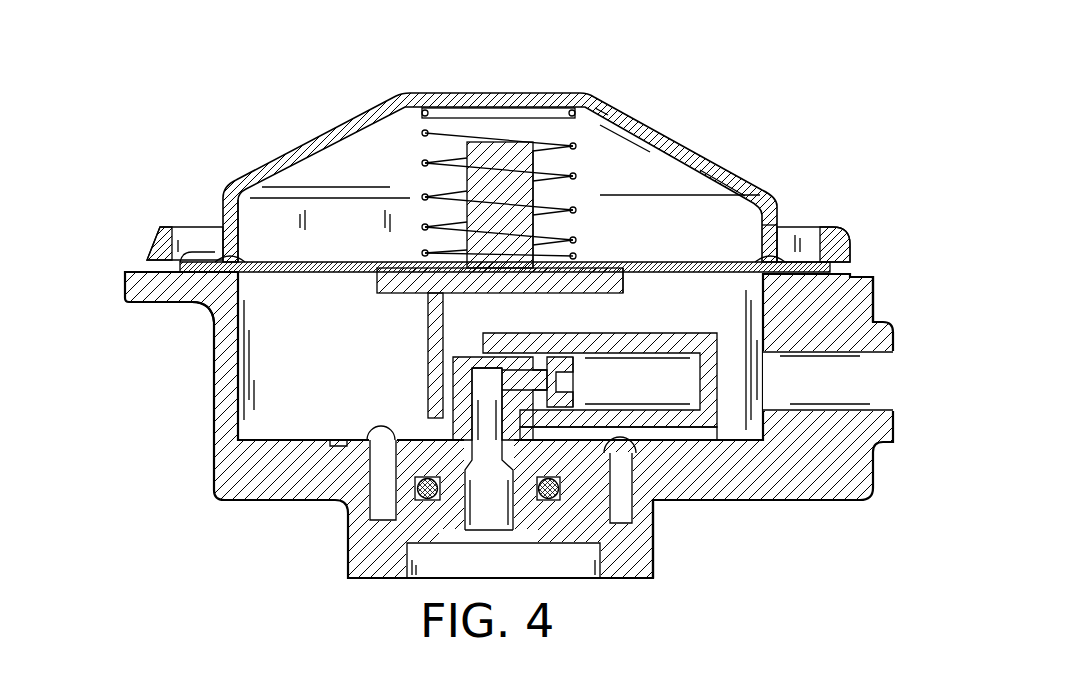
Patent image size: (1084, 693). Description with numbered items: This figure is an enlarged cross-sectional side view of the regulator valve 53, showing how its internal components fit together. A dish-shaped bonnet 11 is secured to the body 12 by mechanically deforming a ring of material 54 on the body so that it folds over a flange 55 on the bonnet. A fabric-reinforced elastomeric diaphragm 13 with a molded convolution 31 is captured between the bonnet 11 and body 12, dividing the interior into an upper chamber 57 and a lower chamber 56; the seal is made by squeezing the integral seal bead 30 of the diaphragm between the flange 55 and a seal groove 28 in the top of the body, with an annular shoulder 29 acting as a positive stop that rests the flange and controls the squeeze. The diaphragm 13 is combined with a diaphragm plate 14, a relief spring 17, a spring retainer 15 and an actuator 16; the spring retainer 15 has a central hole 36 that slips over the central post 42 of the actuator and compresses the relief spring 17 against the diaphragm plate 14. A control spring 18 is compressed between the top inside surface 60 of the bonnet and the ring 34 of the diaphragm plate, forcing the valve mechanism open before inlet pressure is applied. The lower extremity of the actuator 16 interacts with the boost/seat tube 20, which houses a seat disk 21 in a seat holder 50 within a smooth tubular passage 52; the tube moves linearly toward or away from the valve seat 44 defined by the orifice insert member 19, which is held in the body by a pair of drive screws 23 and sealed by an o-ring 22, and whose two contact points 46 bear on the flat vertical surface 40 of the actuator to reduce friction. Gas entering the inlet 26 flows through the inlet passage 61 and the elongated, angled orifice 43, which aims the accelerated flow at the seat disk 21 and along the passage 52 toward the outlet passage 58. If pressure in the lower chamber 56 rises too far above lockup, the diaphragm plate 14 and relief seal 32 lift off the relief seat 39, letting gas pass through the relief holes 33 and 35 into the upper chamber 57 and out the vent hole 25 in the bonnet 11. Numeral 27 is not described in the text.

The bonnet 11 is at (692, 130).
The body 12 is at (200, 371).
The diaphragm 13 is at (210, 313).
The diaphragm plate 14 is at (305, 262).
The spring retainer 15 is at (620, 175).
The actuator 16 is at (398, 296).
The relief spring 17 is at (462, 200).
The control spring 18 is at (488, 253).
The orifice insert member 19 is at (466, 462).
The boost/seat tube 20 is at (697, 432).
The seat disk 21 is at (577, 370).
The o-ring 22 is at (545, 502).
The drive screws 23 is at (377, 450).
The vent hole 25 is at (777, 210).
The inlet 26 is at (448, 563).
The body shoulder 27 is at (653, 505).
The seal groove 28 is at (875, 284).
The annular shoulder 29 is at (195, 262).
The seal bead 30 is at (838, 240).
The molded convolution 31 is at (225, 197).
The relief seal 32 is at (310, 280).
The relief hole 33 is at (560, 247).
The ring 34 is at (722, 178).
The relief hole 35 is at (428, 250).
The central hole 36 is at (290, 155).
The relief seat 39 is at (628, 286).
The flat vertical surface 40 is at (428, 323).
The central post 42 is at (604, 118).
The orifice 43 is at (517, 380).
The valve seat 44 is at (545, 377).
The contact points 46 is at (448, 373).
The seat holder 50 is at (667, 500).
The tubular passage 52 is at (672, 390).
The regulator valve 53 is at (206, 92).
The ring of material 54 is at (166, 225).
The flange 55 is at (810, 255).
The lower chamber 56 is at (189, 366).
The upper chamber 57 is at (350, 232).
The outlet passage 58 is at (857, 380).
The top inside surface 60 is at (503, 110).
The inlet passage 61 is at (498, 512).